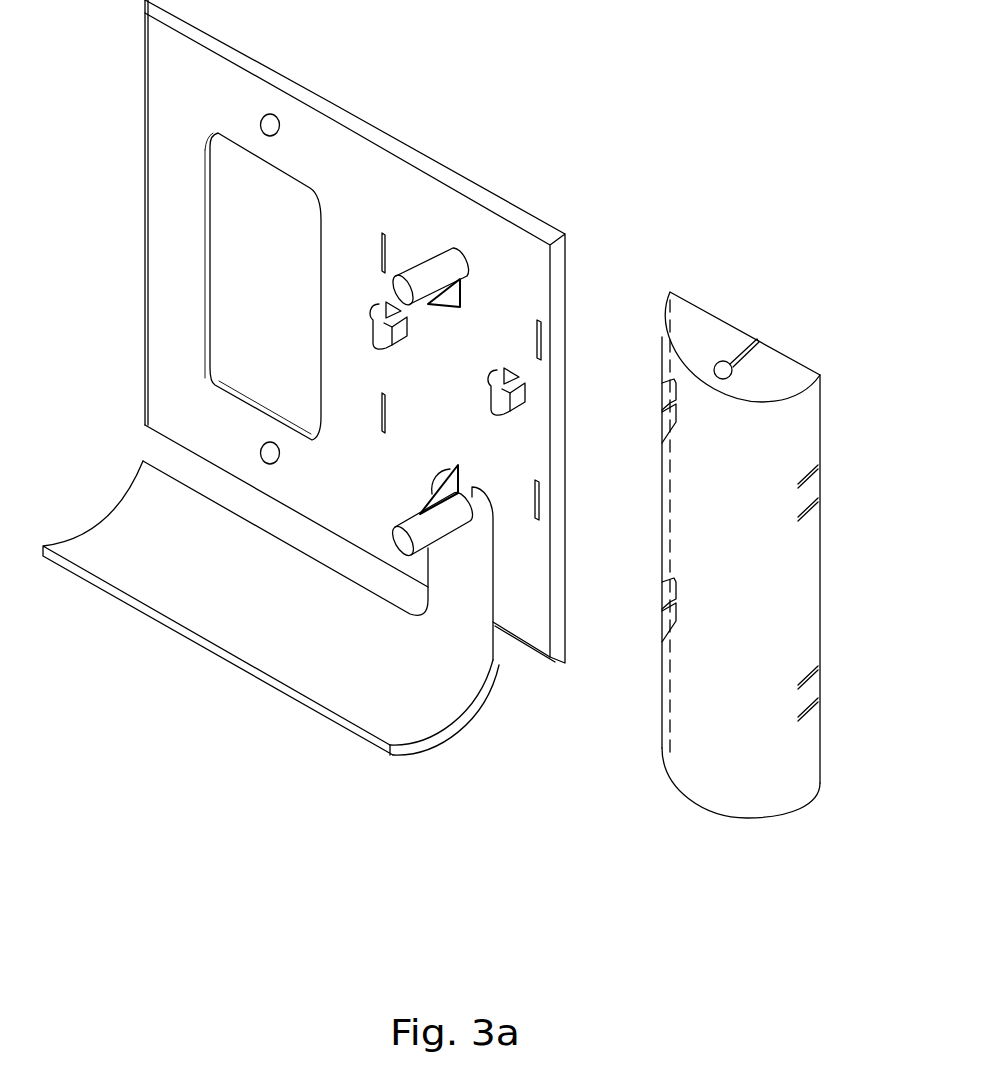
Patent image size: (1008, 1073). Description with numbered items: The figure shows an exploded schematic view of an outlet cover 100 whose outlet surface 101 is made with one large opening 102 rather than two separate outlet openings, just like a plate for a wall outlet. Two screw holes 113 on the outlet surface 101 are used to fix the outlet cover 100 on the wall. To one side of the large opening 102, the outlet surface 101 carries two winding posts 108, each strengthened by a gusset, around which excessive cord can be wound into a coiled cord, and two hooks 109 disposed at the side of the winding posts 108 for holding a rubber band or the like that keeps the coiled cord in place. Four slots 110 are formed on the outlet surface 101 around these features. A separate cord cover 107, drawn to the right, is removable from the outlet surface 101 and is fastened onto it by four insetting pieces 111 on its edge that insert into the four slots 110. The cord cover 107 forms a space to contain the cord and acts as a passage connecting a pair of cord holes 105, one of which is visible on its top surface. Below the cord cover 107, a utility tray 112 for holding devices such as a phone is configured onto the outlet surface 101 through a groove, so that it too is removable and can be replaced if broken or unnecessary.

The outlet cover 100 is at (463, 67).
The outlet surface 101 is at (176, 123).
The large opening 102 is at (225, 197).
The cord hole 105 is at (723, 362).
The cord cover 107 is at (733, 715).
The winding post 108 is at (437, 274).
The hook 109 is at (390, 328).
The slot 110 is at (538, 498).
The insetting piece 111 is at (815, 488).
The utility tray 112 is at (413, 667).
The screw hole 113 is at (262, 125).